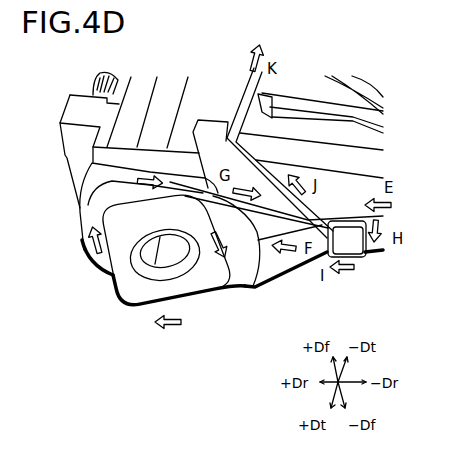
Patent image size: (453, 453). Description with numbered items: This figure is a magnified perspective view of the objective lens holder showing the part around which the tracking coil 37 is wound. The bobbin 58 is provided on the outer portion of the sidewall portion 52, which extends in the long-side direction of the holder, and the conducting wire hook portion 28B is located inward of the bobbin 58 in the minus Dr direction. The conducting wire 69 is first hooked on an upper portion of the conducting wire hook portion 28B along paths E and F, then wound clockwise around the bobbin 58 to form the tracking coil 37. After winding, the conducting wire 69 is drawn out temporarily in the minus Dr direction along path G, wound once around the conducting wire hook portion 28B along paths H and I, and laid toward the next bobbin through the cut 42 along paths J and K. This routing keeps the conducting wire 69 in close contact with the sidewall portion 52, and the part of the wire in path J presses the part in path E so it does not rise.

The cut 42 is at (245, 121).
The conducting wire 69 is at (250, 156).
The tracking coil 37 is at (97, 270).
The bobbin 58 is at (140, 297).
The sidewall portion 52 is at (262, 288).
The conducting wire hook portion 28B is at (366, 258).